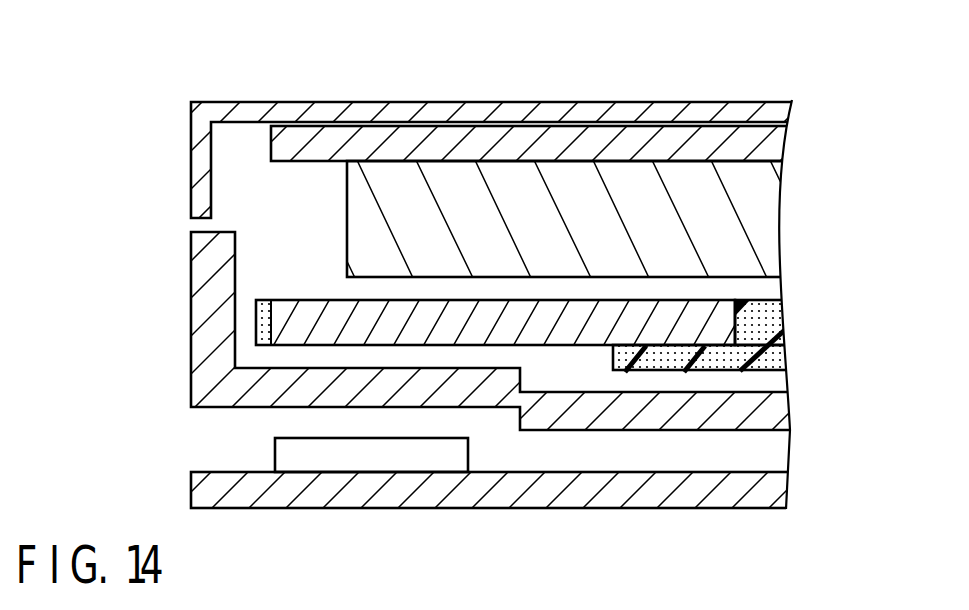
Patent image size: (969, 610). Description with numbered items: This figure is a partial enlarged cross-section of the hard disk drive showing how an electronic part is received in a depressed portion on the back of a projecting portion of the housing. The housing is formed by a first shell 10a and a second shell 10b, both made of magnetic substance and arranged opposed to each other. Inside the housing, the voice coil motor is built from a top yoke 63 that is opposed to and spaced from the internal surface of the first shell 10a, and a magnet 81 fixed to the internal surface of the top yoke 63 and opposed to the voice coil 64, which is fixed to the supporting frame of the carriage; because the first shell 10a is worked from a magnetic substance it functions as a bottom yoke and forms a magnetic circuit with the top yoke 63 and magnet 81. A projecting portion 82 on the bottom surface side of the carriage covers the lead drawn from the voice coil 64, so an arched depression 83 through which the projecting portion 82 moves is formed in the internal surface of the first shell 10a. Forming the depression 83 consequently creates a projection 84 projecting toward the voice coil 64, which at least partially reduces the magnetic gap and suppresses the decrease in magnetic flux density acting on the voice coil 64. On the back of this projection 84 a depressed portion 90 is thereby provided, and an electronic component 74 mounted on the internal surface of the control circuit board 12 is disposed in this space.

The first shell 10a is at (691, 421).
The second shell 10b is at (538, 103).
The control circuit board 12 is at (591, 490).
The top yoke 63 is at (272, 145).
The voice coil 64 is at (338, 316).
The electronic component 74 is at (468, 455).
The magnet 81 is at (758, 222).
The projecting portion 82 is at (653, 391).
The depression 83 is at (762, 356).
The projection 84 is at (298, 367).
The depressed portion 90 is at (240, 408).